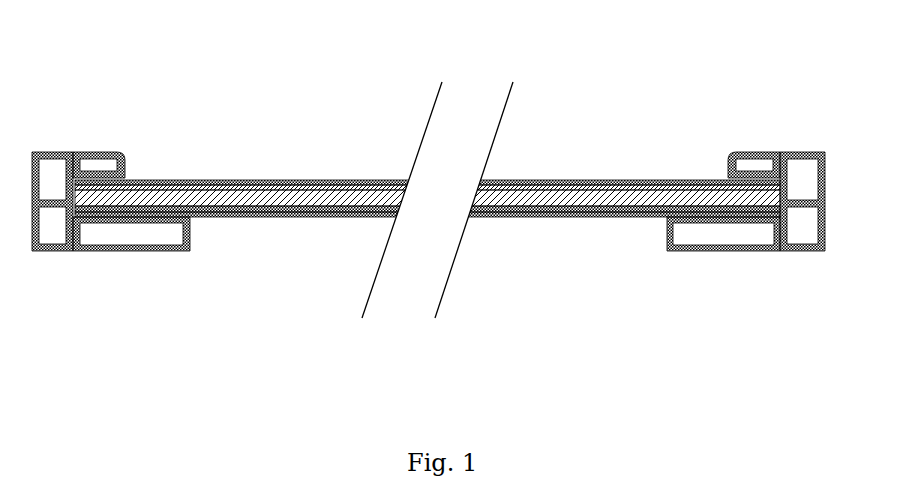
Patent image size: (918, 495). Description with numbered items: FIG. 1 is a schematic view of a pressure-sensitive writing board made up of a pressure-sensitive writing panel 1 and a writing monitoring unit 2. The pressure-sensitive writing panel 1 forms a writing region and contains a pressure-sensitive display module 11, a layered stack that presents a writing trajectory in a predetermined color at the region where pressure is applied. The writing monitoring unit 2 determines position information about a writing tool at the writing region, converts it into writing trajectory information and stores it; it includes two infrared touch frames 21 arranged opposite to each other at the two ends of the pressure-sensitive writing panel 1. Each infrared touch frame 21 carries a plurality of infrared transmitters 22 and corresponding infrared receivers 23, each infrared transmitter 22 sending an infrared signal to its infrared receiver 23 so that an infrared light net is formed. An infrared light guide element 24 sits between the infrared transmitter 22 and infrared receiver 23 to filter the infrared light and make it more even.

The pressure-sensitive writing panel 1 is at (565, 50).
The pressure-sensitive display module 11 is at (603, 157).
The writing monitoring unit 2 is at (725, 90).
The infrared touch frame 21 is at (57, 232).
The infrared transmitter 22 is at (778, 155).
The infrared receiver 23 is at (83, 158).
The infrared light guide element 24 is at (127, 170).